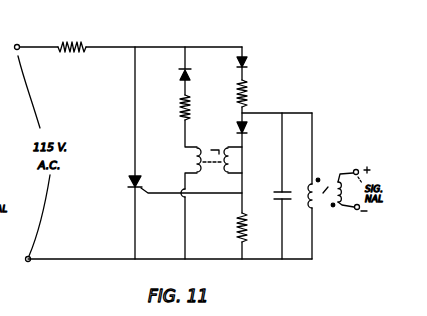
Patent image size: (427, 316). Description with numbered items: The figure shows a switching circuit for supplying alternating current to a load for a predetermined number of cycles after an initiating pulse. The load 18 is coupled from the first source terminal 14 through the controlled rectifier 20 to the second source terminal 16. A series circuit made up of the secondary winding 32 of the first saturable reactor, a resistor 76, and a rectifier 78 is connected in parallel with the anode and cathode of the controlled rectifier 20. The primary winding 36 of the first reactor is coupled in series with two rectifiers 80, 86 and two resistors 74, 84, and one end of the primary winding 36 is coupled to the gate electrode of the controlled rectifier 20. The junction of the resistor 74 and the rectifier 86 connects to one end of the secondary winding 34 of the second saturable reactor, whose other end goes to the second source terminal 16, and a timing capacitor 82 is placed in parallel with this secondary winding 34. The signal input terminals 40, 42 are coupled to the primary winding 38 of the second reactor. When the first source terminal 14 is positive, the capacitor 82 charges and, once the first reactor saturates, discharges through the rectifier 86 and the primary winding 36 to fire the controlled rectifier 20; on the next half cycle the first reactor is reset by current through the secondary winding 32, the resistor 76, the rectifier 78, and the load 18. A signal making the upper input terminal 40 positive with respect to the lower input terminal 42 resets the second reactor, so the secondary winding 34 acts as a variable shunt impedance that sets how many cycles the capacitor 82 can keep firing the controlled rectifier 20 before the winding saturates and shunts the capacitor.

The first source terminal 14 is at (17, 44).
The load 18 is at (90, 34).
The second source terminal 16 is at (27, 263).
The rectifier 78 is at (178, 71).
The resistor 76 is at (180, 108).
The rectifier 80 is at (250, 64).
The resistor 74 is at (250, 94).
The rectifier 86 is at (248, 132).
The controlled rectifier 20 is at (130, 178).
The secondary winding 32 is at (181, 163).
The primary winding 36 is at (236, 160).
The timing capacitor 82 is at (278, 195).
The resistor 84 is at (248, 232).
The secondary winding 34 is at (301, 205).
The primary winding 38 is at (341, 208).
The signal input terminal 40 is at (355, 169).
The signal input terminal 42 is at (357, 211).